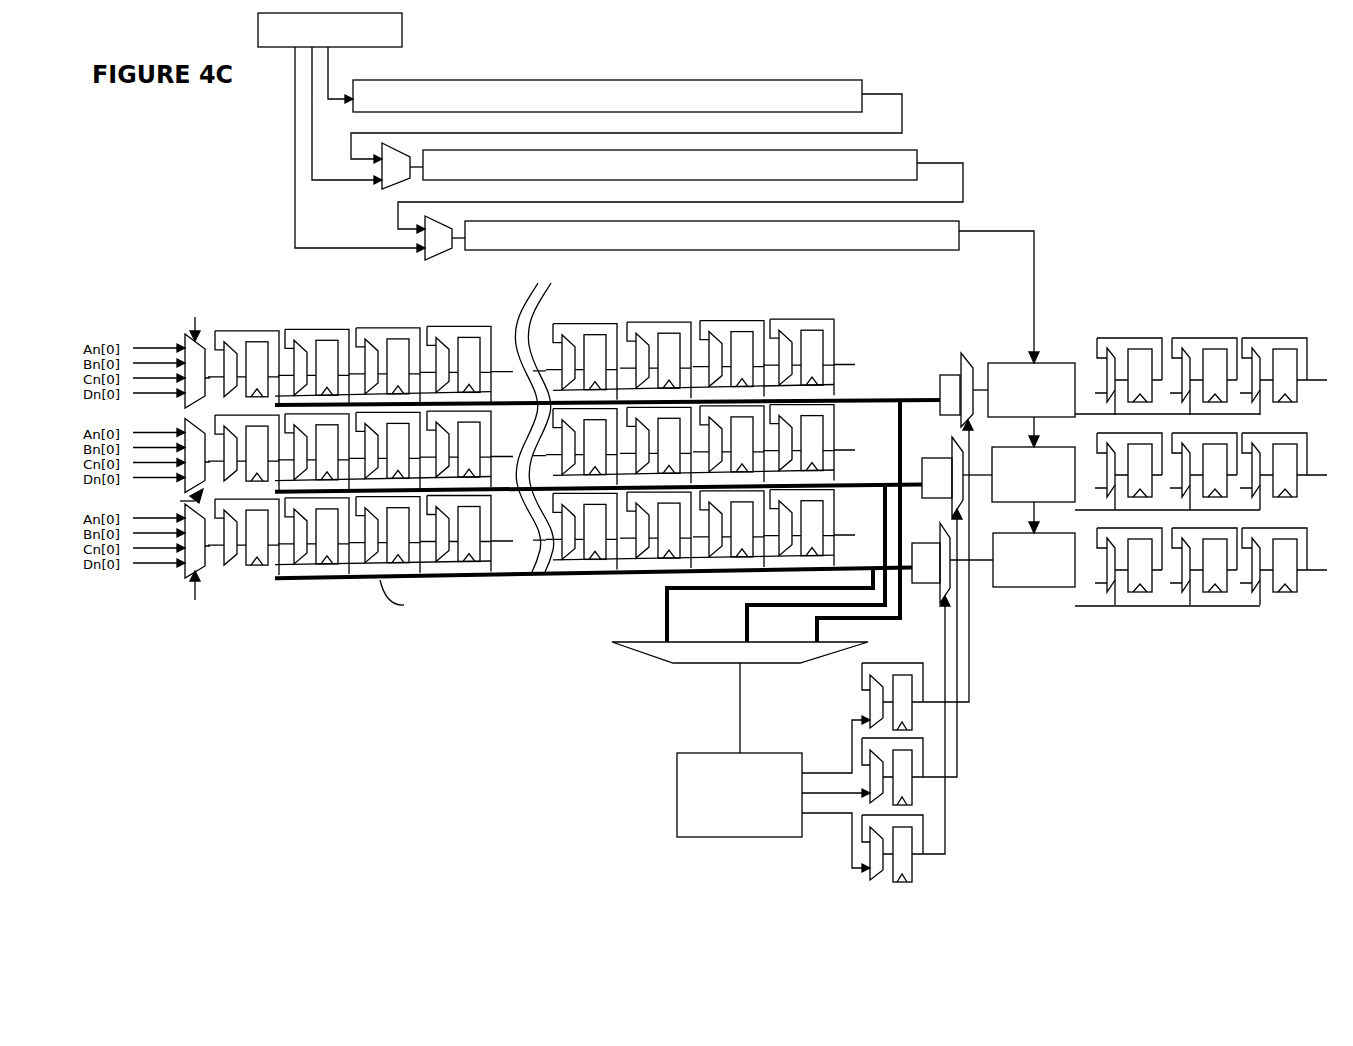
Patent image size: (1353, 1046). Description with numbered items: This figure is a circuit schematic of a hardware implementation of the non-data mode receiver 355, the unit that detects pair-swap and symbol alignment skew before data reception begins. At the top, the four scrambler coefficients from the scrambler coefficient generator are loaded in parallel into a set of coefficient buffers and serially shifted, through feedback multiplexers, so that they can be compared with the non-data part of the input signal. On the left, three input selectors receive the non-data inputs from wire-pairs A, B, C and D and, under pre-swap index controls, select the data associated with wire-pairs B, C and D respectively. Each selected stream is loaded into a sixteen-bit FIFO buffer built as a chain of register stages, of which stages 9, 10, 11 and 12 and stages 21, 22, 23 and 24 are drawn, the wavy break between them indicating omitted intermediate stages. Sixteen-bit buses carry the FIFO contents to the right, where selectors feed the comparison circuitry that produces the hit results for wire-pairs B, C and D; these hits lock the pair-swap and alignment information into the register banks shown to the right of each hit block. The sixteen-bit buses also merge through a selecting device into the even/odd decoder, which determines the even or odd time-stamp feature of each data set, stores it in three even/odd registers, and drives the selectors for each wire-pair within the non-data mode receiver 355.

The non-data mode receiver 355 is at (1152, 102).
The register stage 9 is at (243, 445).
The register stage 10 is at (313, 443).
The register stage 11 is at (384, 442).
The register stage 12 is at (456, 441).
The register stage 21 is at (581, 438).
The register stage 22 is at (655, 437).
The register stage 23 is at (728, 436).
The register stage 24 is at (802, 434).